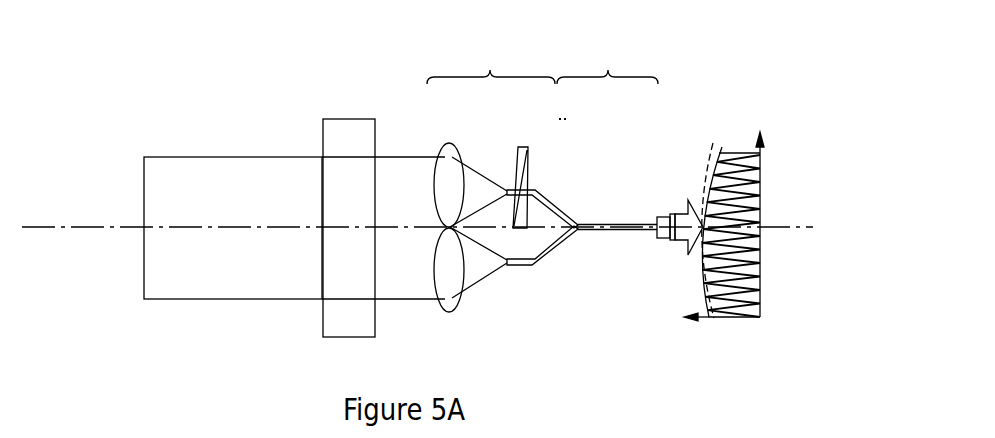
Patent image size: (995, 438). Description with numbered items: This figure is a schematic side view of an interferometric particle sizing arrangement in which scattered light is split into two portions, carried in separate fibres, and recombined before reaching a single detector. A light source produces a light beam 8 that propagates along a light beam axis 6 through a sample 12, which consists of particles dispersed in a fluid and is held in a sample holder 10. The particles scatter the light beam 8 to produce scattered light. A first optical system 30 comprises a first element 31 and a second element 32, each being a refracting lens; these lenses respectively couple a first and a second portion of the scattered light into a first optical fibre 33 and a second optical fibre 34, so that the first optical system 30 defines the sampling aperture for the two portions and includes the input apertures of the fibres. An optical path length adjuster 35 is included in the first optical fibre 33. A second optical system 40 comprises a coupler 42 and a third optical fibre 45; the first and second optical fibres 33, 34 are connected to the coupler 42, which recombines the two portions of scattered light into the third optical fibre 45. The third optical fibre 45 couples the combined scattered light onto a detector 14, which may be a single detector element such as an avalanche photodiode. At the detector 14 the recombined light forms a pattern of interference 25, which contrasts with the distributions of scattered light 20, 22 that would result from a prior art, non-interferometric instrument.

The light beam axis 6 is at (112, 224).
The light beam 8 is at (294, 228).
The sample holder 10 is at (315, 214).
The sample 12 is at (322, 134).
The detector 14 is at (660, 240).
The distribution of scattered light 20 is at (708, 152).
The distribution of scattered light 22 is at (722, 147).
The pattern of interference 25 is at (727, 318).
The first optical system 30 is at (490, 68).
The first element 31 is at (442, 148).
The second element 32 is at (457, 313).
The first optical fibre 33 is at (556, 205).
The second optical fibre 34 is at (553, 250).
The optical path length adjuster 35 is at (513, 165).
The second optical system 40 is at (608, 68).
The coupler 42 is at (582, 220).
The third optical fibre 45 is at (630, 223).